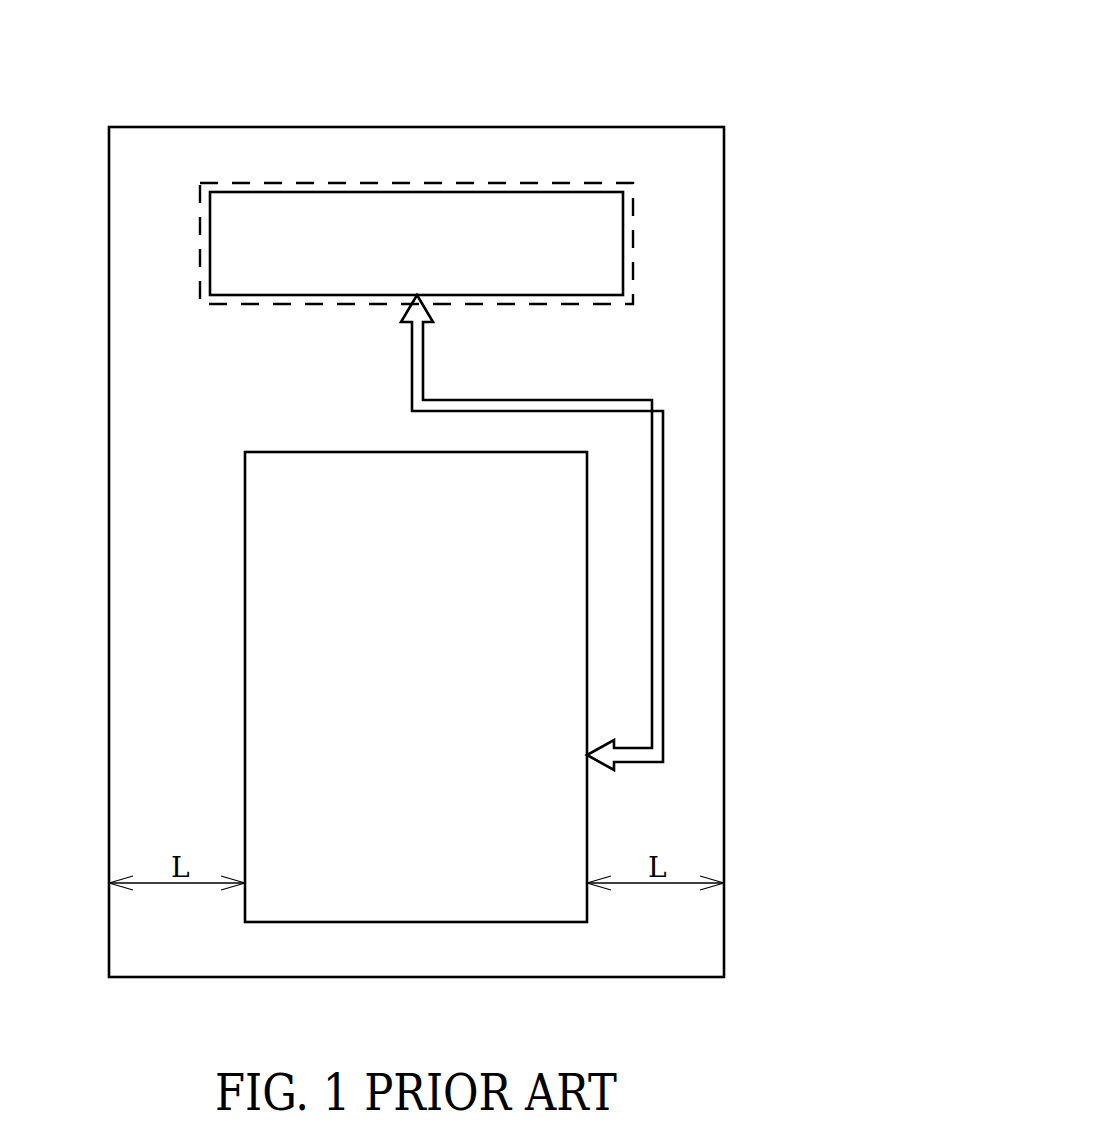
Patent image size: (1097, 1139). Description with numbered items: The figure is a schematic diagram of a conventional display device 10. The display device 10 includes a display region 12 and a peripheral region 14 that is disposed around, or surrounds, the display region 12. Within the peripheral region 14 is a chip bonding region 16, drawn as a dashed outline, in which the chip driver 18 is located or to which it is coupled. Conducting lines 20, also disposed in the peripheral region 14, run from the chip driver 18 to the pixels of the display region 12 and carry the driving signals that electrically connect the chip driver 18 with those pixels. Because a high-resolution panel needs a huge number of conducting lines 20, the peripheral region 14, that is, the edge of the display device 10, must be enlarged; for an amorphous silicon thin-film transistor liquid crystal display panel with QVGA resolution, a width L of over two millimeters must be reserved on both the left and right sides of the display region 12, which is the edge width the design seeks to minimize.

The conventional display device 10 is at (654, 63).
The display region 12 is at (426, 708).
The peripheral region 14 is at (693, 497).
The chip bonding region 16 is at (634, 227).
The chip driver 18 is at (426, 258).
The conducting lines 20 is at (657, 650).